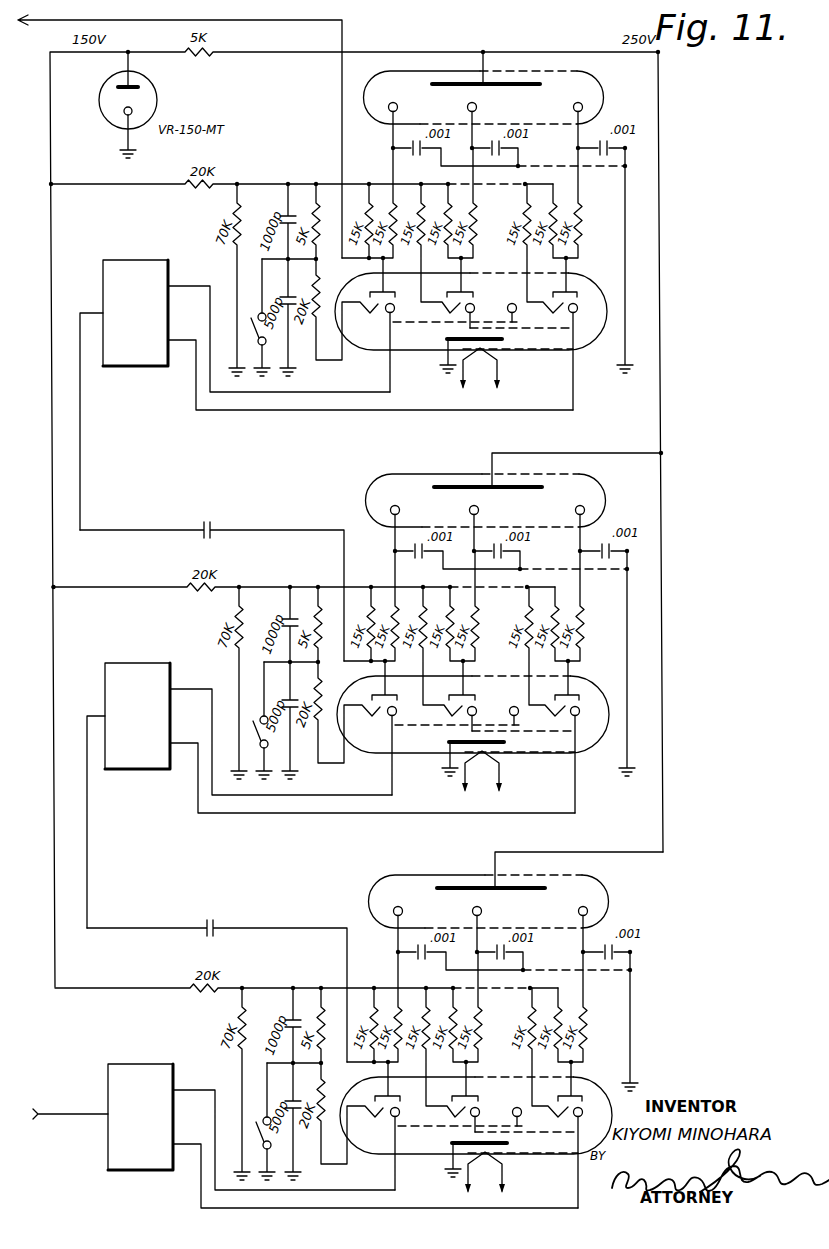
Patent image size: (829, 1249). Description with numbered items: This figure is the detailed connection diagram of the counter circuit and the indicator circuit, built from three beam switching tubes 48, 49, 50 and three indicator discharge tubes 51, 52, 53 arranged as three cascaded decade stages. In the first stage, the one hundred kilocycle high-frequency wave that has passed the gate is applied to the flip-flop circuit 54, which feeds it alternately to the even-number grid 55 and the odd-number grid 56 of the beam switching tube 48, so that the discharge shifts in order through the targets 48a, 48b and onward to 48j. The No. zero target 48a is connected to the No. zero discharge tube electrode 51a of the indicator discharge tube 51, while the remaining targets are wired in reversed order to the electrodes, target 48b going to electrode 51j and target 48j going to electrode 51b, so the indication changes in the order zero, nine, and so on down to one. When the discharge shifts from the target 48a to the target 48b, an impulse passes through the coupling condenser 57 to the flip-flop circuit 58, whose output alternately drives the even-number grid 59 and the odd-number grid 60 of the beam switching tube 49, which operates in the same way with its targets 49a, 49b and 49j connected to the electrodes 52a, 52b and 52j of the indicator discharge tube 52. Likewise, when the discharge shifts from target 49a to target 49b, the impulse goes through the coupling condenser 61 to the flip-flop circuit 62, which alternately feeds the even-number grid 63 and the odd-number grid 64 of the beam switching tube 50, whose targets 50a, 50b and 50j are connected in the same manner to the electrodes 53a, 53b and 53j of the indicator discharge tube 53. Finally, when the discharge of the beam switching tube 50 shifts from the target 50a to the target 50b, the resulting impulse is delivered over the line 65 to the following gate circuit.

The line 65 is at (260, 21).
The flip-flop circuit 62 is at (151, 259).
The indicator discharge tube 53 is at (598, 100).
The discharge tube electrode 53a is at (401, 95).
The discharge tube electrode 53j is at (476, 105).
The discharge tube electrode 53b is at (586, 94).
The beam switching tube 50 is at (607, 324).
The target 50a is at (390, 288).
The target 50b is at (467, 287).
The target 50j is at (570, 288).
The even-number grid 63 is at (422, 324).
The odd-number grid 64 is at (536, 330).
The coupling condenser 61 is at (212, 578).
The flip-flop circuit 58 is at (331, 785).
The indicator discharge tube 52 is at (499, 500).
The discharge tube electrode 52a is at (398, 518).
The discharge tube electrode 52j is at (492, 522).
The discharge tube electrode 52b is at (559, 521).
The beam switching tube 49 is at (475, 716).
The target 49a is at (396, 680).
The target 49b is at (477, 679).
The target 49j is at (579, 680).
The even-number grid 59 is at (457, 748).
The odd-number grid 60 is at (520, 756).
The coupling condenser 57 is at (217, 980).
The flip-flop circuit 54 is at (305, 1123).
The indicator discharge tube 51 is at (502, 901).
The discharge tube electrode 51a is at (405, 919).
The discharge tube electrode 51j is at (494, 923).
The discharge tube electrode 51b is at (580, 919).
The beam switching tube 48 is at (486, 1115).
The target 48a is at (399, 1081).
The target 48b is at (480, 1080).
The target 48j is at (582, 1081).
The even-number grid 55 is at (460, 1149).
The odd-number grid 56 is at (523, 1153).